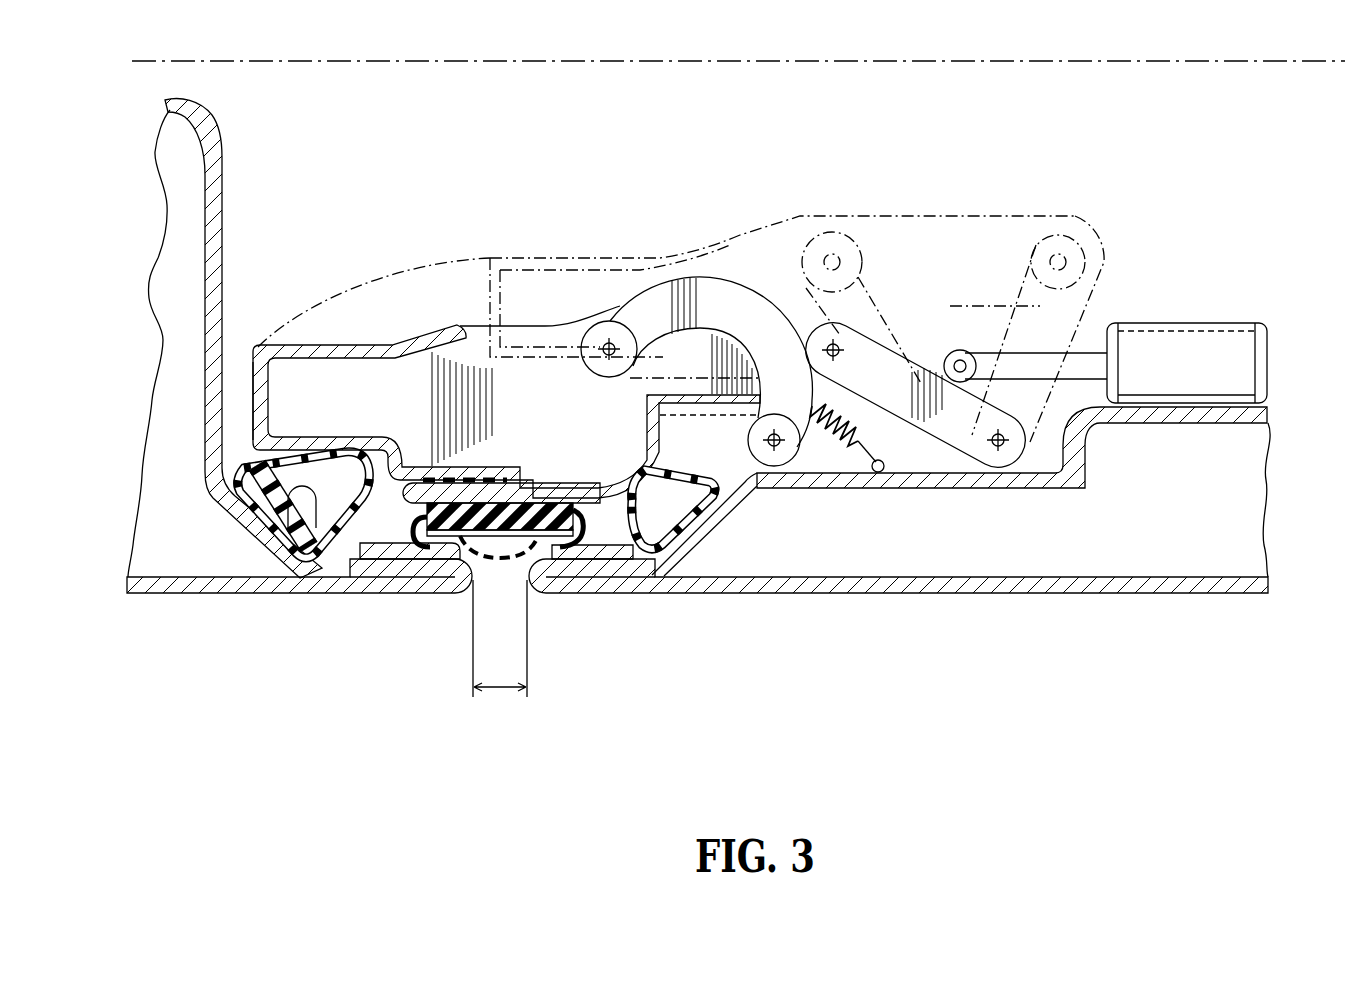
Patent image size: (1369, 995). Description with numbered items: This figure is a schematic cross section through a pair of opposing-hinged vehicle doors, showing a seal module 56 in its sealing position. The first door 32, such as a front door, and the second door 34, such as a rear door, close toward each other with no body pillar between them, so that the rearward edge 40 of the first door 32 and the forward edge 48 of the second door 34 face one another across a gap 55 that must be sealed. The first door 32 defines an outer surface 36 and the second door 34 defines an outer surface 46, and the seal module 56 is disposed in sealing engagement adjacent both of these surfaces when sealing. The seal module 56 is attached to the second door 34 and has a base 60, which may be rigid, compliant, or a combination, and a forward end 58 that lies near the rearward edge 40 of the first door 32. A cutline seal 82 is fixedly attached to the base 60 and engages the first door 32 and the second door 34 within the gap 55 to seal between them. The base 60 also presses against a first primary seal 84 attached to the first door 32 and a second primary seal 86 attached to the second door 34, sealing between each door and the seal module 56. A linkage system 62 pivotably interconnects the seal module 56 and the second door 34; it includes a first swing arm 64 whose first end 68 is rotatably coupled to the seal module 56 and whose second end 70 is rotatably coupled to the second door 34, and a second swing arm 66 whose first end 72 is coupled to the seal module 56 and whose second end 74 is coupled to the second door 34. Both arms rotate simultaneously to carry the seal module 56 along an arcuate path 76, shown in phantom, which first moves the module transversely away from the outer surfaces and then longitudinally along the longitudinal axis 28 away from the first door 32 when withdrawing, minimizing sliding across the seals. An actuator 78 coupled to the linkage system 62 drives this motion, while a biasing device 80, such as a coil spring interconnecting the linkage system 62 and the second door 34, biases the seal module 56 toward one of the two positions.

The longitudinal axis 28 is at (900, 60).
The first door 32 is at (145, 592).
The second door 34 is at (973, 593).
The outer surface 36 is at (262, 594).
The rearward edge 40 is at (475, 568).
The outer surface 46 is at (766, 590).
The forward edge 48 is at (528, 568).
The gap 55 is at (497, 690).
The seal module 56 is at (560, 288).
The forward end 58 is at (250, 392).
The base 60 is at (354, 352).
The linkage system 62 is at (903, 448).
The first swing arm 64 is at (712, 290).
The second swing arm 66 is at (912, 396).
The first end 68 is at (597, 378).
The second end 70 is at (750, 475).
The first end 72 is at (812, 335).
The second end 74 is at (1028, 452).
The arcuate path 76 is at (320, 275).
The actuator 78 is at (1175, 324).
The biasing device 80 is at (836, 455).
The cutline seal 82 is at (406, 540).
The first primary seal 84 is at (280, 506).
The second primary seal 86 is at (657, 580).